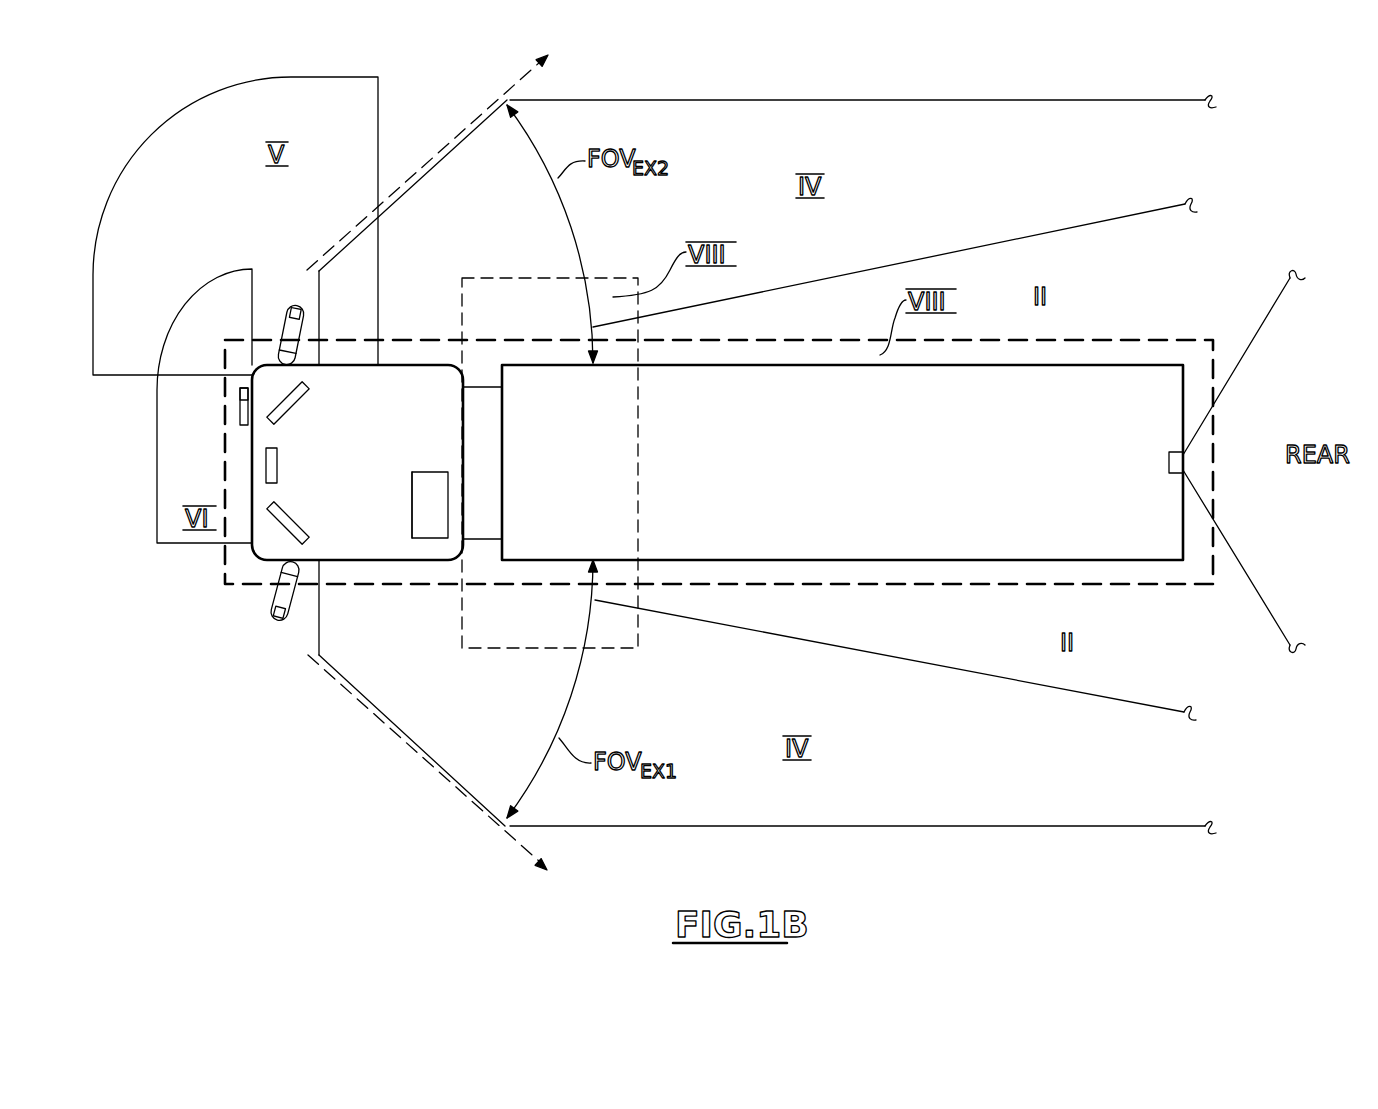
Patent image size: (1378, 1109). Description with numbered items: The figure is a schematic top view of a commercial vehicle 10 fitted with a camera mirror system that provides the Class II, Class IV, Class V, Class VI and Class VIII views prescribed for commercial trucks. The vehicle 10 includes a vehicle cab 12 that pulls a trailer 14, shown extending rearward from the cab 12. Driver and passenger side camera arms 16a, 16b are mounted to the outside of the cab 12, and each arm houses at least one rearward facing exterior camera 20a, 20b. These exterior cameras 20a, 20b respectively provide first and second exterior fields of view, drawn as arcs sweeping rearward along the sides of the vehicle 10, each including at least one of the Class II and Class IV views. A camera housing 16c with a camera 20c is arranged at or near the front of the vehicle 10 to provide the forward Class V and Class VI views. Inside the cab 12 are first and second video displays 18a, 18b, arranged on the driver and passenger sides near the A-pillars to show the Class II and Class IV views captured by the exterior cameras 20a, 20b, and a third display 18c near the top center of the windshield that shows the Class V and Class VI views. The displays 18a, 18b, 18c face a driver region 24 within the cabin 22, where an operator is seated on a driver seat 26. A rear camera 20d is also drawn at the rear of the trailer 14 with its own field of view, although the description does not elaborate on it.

The commercial vehicle 10 is at (222, 352).
The vehicle cab 12 is at (240, 558).
The trailer 14 is at (1095, 355).
The driver side camera arm 16a is at (287, 607).
The passenger side camera arm 16b is at (282, 312).
The camera housing 16c is at (240, 412).
The first video display 18a is at (292, 522).
The second video display 18b is at (290, 402).
The third display 18c is at (266, 462).
The exterior camera 20a is at (301, 616).
The exterior camera 20b is at (302, 309).
The front camera 20c is at (240, 393).
The rear camera 20d is at (1183, 462).
The cabin 22 is at (404, 380).
The driver region 24 is at (396, 492).
The driver seat 26 is at (430, 483).